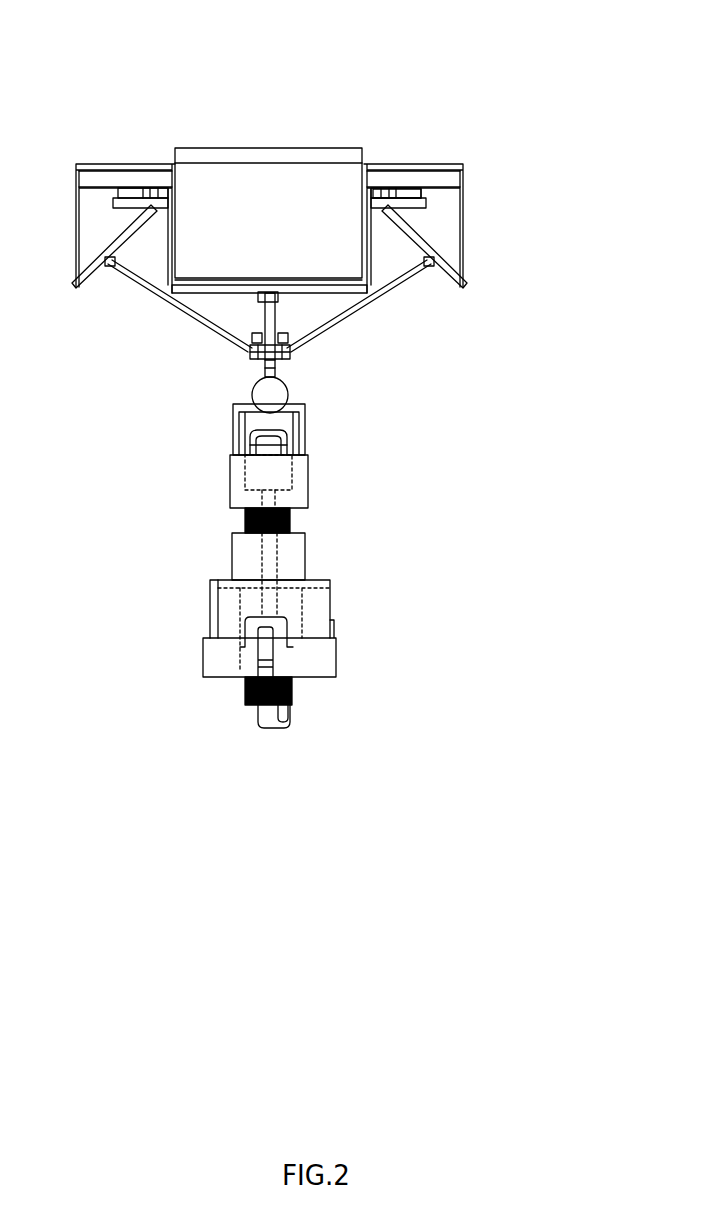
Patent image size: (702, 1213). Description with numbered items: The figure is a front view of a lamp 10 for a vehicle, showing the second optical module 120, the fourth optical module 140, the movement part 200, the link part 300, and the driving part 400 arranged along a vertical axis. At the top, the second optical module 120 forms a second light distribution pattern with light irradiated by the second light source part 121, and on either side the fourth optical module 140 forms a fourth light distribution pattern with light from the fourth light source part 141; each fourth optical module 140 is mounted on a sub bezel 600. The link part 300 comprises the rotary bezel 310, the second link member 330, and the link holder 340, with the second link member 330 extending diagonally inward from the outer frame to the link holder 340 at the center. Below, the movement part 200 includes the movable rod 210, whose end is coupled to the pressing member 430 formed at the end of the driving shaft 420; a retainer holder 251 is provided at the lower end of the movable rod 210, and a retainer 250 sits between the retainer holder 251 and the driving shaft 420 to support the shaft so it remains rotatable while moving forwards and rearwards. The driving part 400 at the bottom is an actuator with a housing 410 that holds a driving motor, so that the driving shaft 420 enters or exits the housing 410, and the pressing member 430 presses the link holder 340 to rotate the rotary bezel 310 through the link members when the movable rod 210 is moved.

The lamp 10 is at (76, 41).
The second optical module 120 is at (280, 68).
The second light source part 121 is at (255, 148).
The fourth optical module 140 is at (475, 65).
The fourth light source part 141 is at (433, 165).
The sub bezel 600 is at (453, 180).
The link part 300 is at (283, 211).
The rotary bezel 310 is at (317, 187).
The second link member 330 is at (397, 293).
The link holder 340 is at (285, 357).
The movement part 200 is at (224, 400).
The movable rod 210 is at (258, 356).
The pressing member 430 is at (290, 388).
The retainer 250 is at (248, 437).
The retainer holder 251 is at (230, 493).
The driving part 400 is at (366, 618).
The driving shaft 420 is at (293, 522).
The housing 410 is at (322, 605).